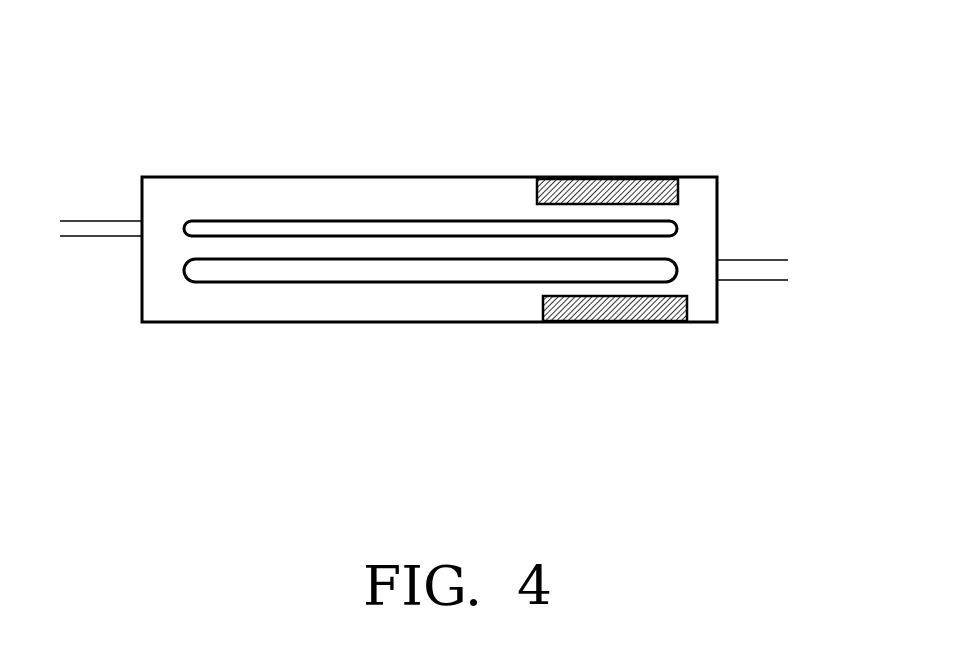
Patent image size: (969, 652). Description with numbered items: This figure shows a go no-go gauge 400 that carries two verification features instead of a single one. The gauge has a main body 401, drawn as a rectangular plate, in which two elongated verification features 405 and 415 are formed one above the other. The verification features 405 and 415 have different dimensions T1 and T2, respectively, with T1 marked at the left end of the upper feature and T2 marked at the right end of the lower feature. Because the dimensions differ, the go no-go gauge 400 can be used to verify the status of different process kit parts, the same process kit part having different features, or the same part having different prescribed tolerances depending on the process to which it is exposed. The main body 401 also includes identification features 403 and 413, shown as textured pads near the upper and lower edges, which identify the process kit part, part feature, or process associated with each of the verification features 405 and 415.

The go no-go gauge 400 is at (491, 211).
The main body 401 is at (503, 177).
The identification feature 403 is at (618, 188).
The verification feature 405 is at (324, 218).
The identification feature 413 is at (640, 308).
The verification feature 415 is at (315, 283).
The dimension T1 is at (70, 202).
The dimension T2 is at (776, 300).